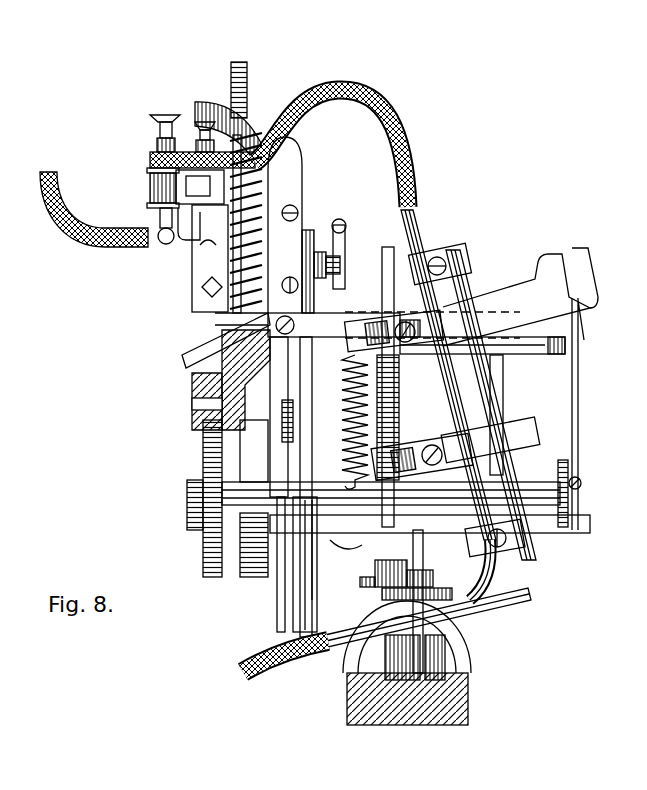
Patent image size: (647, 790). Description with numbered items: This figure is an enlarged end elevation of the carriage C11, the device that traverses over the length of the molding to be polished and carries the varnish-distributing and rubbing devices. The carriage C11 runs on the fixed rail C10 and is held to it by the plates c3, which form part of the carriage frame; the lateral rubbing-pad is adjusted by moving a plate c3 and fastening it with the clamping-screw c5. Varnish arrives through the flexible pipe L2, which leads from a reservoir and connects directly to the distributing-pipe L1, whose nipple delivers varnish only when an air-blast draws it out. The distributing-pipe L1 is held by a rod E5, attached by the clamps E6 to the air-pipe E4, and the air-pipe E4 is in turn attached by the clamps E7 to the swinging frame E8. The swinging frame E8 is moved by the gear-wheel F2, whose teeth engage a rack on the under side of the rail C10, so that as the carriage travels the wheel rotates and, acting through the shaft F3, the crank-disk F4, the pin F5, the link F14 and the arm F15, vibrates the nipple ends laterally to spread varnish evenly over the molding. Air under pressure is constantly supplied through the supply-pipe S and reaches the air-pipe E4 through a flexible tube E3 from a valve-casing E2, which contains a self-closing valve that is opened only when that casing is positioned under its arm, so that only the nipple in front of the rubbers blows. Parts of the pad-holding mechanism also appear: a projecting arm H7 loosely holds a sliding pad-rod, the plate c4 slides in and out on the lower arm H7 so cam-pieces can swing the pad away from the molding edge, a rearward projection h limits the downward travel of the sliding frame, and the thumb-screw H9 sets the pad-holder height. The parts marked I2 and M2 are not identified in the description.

The supply-pipe S is at (94, 209).
The valve-casing E2 is at (150, 170).
The flexible tube E3 is at (344, 148).
The projection h is at (192, 310).
The carriage C11 is at (313, 225).
The thumb-screw H9 is at (345, 240).
The plate c3 is at (190, 470).
The rail C10 is at (231, 380).
The threaded rod I2 is at (288, 433).
The swinging frame E8 is at (400, 395).
The air-pipe E4 is at (415, 230).
The rod E5 is at (462, 290).
The arm F15 is at (471, 297).
The link F14 is at (578, 380).
The projecting arm H7 is at (538, 342).
The clamp E7 is at (442, 395).
The clamp E6 is at (460, 268).
The shaft F3 is at (322, 490).
The plate c4 is at (585, 530).
The crank-disk F4 is at (570, 470).
The pin F5 is at (582, 484).
The gear-wheel F2 is at (203, 533).
The clamping-screw c5 is at (391, 601).
The pedestal M2 is at (380, 726).
The distributing-pipe L1 is at (428, 617).
The flexible pipe L2 is at (285, 662).